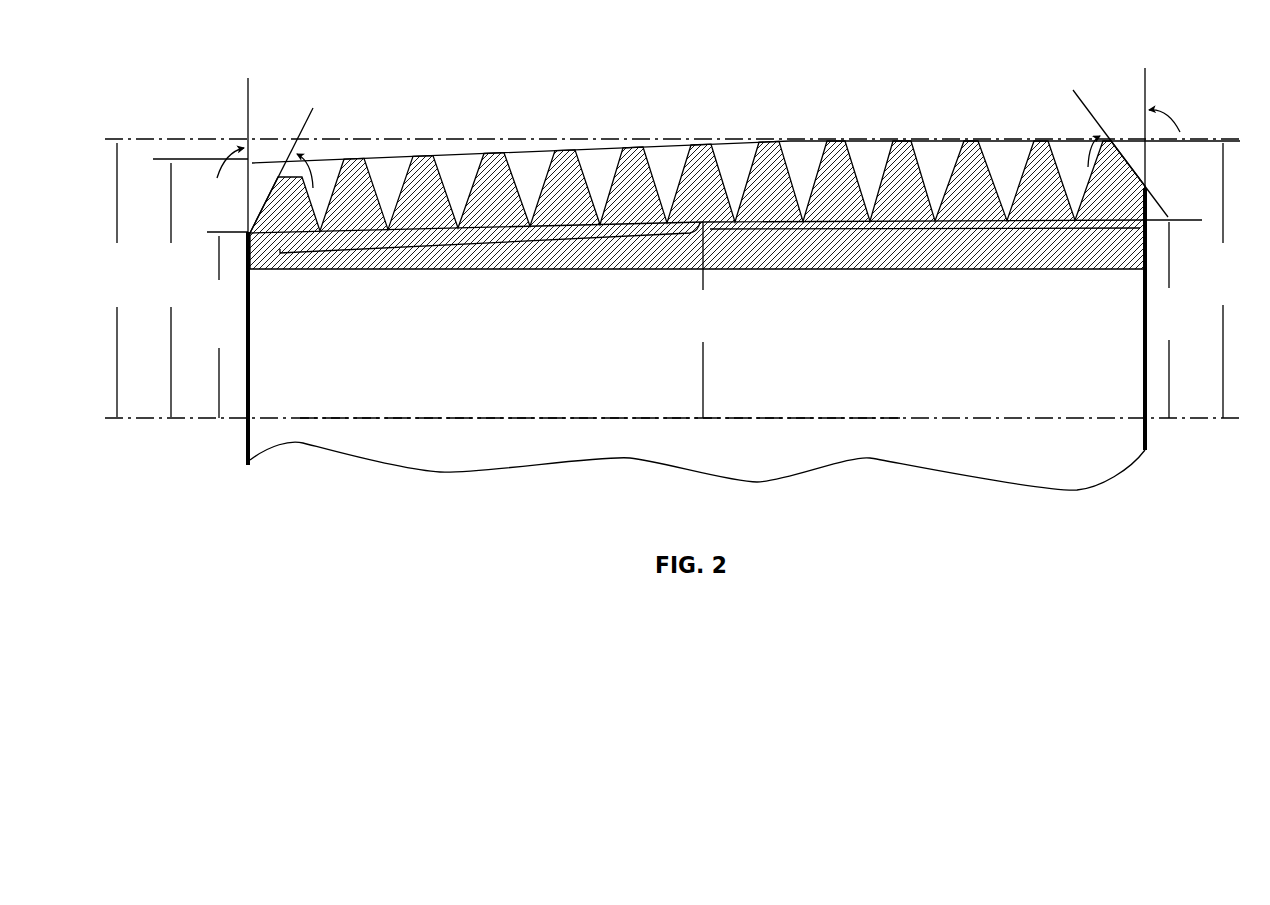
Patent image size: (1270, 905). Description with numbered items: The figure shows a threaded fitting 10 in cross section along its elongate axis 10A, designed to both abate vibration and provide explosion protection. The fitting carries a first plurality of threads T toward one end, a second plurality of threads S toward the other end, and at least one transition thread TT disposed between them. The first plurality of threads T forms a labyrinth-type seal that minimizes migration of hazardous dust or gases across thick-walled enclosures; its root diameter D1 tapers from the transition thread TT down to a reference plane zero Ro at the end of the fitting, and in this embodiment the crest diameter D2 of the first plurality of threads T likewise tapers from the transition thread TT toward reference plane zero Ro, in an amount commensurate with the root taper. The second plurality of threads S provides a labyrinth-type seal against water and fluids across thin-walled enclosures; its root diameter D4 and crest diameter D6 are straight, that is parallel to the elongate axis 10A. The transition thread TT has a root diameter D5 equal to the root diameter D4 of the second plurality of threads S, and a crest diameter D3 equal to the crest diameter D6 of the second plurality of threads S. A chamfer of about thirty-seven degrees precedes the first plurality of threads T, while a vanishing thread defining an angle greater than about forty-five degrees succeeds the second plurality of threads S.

The threaded fitting 10 is at (898, 60).
The elongate axis 10A is at (765, 418).
The transition thread TT is at (704, 165).
The first plurality of threads T is at (488, 243).
The second plurality of threads S is at (920, 232).
The reference plane zero RO is at (250, 343).
The root diameter of the first plurality of threads D1 is at (224, 325).
The crest diameter of the first plurality of threads D2 is at (198, 288).
The crest diameter D3 is at (107, 280).
The root diameter of the second plurality of threads D4 is at (1173, 319).
The root diameter of the transition thread D5 is at (698, 320).
The crest diameter of the second plurality of threads D6 is at (1215, 280).